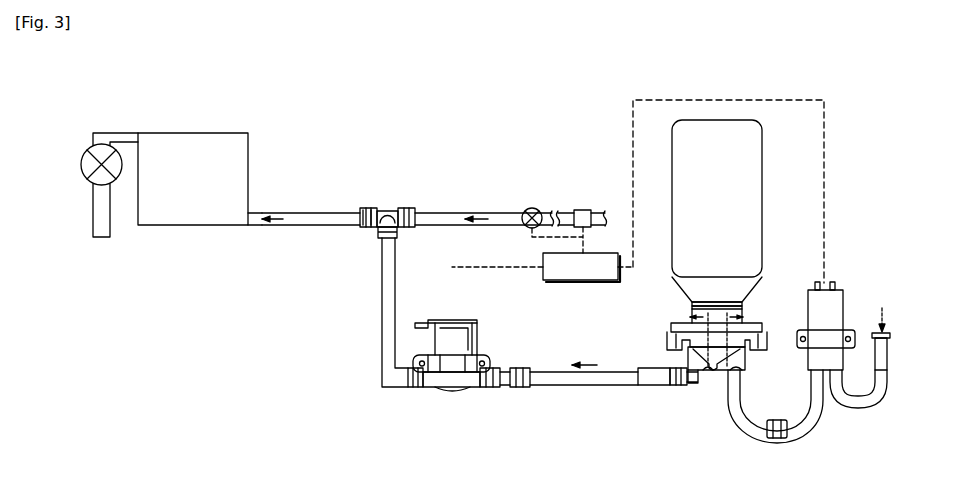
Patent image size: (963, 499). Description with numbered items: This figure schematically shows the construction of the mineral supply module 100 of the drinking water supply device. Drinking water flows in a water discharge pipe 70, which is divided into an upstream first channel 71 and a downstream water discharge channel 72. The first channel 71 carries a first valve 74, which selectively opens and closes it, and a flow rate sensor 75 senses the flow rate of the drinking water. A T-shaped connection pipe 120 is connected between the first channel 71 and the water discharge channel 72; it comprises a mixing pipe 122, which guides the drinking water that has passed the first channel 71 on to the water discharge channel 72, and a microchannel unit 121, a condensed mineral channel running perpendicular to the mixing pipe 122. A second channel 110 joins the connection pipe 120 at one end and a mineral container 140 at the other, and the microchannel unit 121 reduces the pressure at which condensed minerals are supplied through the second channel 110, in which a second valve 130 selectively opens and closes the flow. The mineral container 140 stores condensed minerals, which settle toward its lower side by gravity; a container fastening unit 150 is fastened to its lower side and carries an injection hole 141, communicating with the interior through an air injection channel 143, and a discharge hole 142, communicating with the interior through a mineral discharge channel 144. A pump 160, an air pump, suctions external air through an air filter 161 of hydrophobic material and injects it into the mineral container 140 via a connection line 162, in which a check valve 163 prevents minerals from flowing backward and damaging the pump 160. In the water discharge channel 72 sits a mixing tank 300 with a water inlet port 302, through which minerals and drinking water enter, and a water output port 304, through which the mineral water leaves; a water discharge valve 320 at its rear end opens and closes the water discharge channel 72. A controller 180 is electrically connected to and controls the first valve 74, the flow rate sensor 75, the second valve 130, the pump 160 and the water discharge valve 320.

The water supply module 100 is at (833, 143).
The second channel 110 is at (545, 392).
The connection pipe 120 is at (387, 200).
The microchannel unit 121 is at (395, 388).
The mixing pipe 122 is at (372, 208).
The second valve 130 is at (452, 320).
The mineral container 140 is at (750, 163).
The injection hole 141 is at (738, 366).
The discharge hole 142 is at (710, 378).
The air injection channel 143 is at (744, 316).
The mineral discharge channel 144 is at (690, 312).
The container fastening unit 150 is at (673, 347).
The pump 160 is at (837, 303).
The air filter 161 is at (889, 351).
The connection line 162 is at (813, 417).
The check valve 163 is at (777, 441).
The controller 180 is at (582, 283).
The water discharge pipe 70 is at (408, 258).
The first channel 71 is at (452, 227).
The water discharge channel 72 is at (287, 226).
The first valve 74 is at (532, 207).
The flow rate sensor 75 is at (584, 209).
The mixing tank 300 is at (200, 150).
The water inlet port 302 is at (243, 224).
The water output port 304 is at (143, 140).
The water discharge valve 320 is at (120, 158).